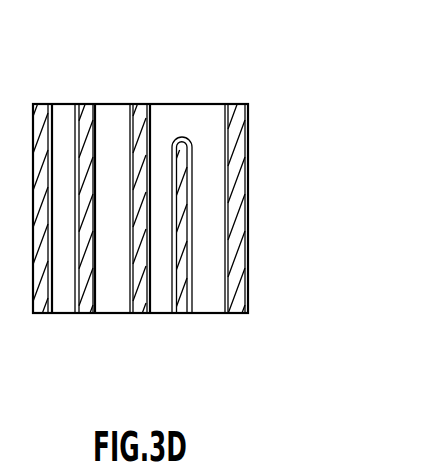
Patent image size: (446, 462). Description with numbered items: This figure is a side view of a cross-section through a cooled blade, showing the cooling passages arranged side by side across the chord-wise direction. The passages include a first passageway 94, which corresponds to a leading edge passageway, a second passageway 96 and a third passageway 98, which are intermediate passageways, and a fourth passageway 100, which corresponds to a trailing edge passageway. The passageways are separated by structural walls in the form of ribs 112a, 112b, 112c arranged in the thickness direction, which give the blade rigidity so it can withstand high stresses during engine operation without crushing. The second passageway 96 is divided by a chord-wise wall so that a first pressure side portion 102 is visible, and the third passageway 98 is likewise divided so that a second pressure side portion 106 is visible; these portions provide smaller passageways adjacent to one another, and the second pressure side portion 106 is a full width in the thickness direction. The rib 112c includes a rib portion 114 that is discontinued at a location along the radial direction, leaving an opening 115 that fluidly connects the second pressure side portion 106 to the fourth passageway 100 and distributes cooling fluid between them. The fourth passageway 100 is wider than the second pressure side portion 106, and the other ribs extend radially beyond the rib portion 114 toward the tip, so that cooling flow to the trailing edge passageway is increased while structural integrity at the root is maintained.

The first passageway 94 is at (63, 99).
The second passageway 96 is at (112, 99).
The third passageway 98 is at (162, 99).
The fourth passageway 100 is at (217, 99).
The first pressure side portion 102 is at (107, 313).
The second pressure side portion 106 is at (162, 313).
The rib 112a is at (84, 313).
The rib 112b is at (138, 313).
The rib 112c is at (182, 313).
The rib portion 114 is at (183, 193).
The opening 115 is at (199, 125).